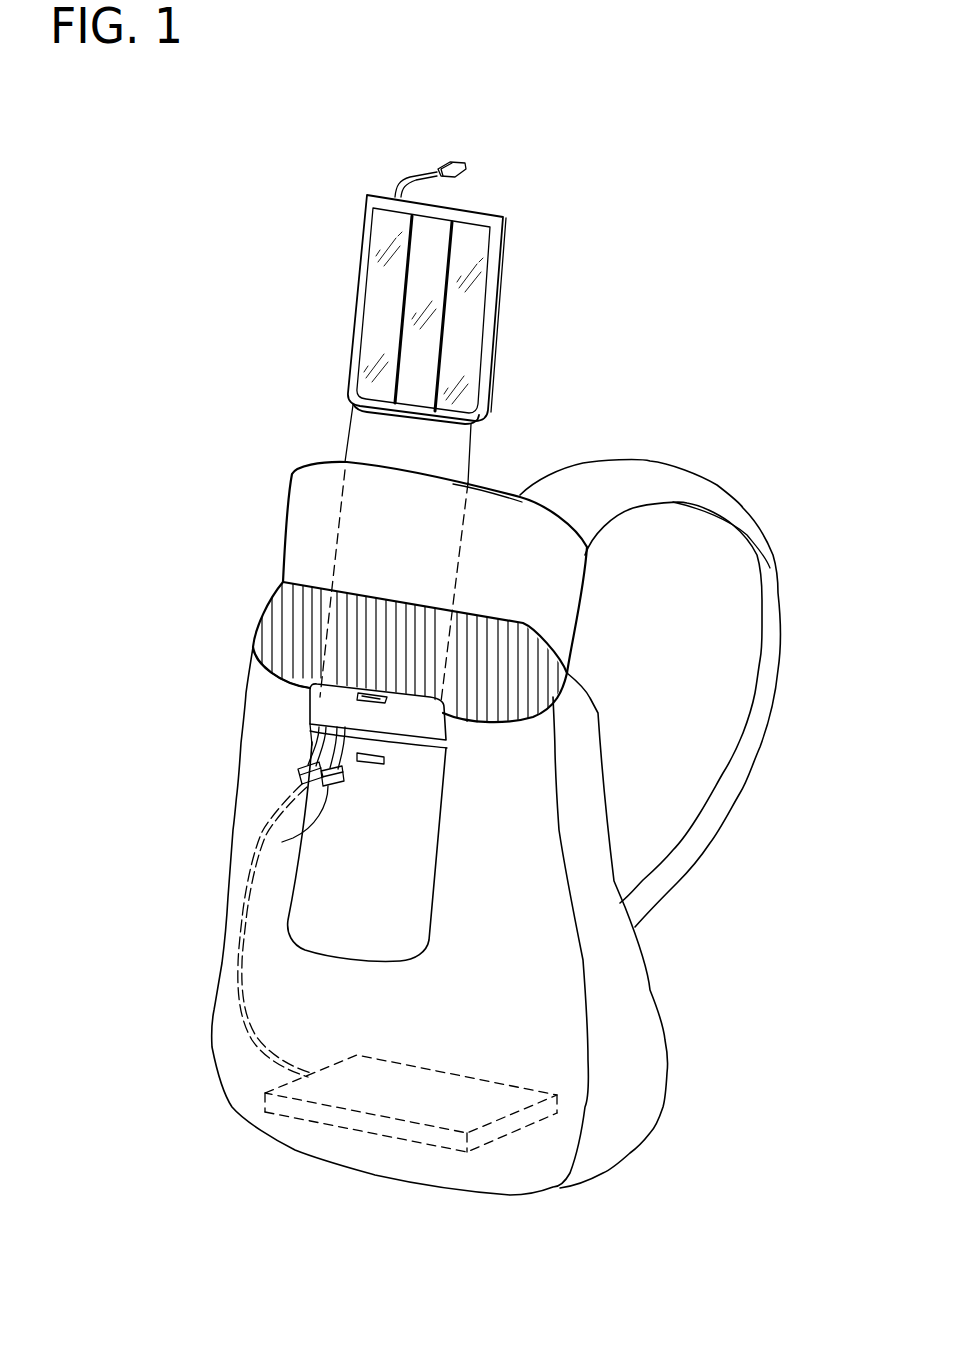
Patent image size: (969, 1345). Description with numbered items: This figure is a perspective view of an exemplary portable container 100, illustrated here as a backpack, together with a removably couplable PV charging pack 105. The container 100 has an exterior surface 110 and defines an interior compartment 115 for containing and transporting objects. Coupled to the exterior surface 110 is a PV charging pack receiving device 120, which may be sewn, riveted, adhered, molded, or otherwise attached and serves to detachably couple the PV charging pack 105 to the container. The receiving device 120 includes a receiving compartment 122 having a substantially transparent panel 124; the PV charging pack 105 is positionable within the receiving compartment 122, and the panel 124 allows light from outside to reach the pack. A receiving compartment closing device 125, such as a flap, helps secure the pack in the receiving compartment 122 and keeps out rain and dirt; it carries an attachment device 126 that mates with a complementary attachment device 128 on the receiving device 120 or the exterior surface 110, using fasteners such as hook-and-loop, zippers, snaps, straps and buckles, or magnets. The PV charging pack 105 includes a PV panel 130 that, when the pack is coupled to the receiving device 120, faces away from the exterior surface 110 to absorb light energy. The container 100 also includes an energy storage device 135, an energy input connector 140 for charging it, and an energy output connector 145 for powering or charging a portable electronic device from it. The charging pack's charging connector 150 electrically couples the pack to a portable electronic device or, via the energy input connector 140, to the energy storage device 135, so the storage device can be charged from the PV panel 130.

The portable container 100 is at (216, 1219).
The PV charging pack 105 is at (396, 415).
The exterior surface 110 is at (573, 1030).
The interior compartment 115 is at (534, 664).
The PV charging pack receiving device 120 is at (414, 853).
The receiving compartment 122 is at (410, 727).
The substantially transparent panel 124 is at (307, 898).
The receiving compartment closing device 125 is at (333, 658).
The attachment device 126 is at (357, 694).
The complementary attachment device 128 is at (385, 761).
The PV panel 130 is at (472, 293).
The energy storage device 135 is at (423, 1142).
The energy input connector 140 is at (293, 836).
The energy output connector 145 is at (320, 792).
The charging connector 150 is at (412, 178).